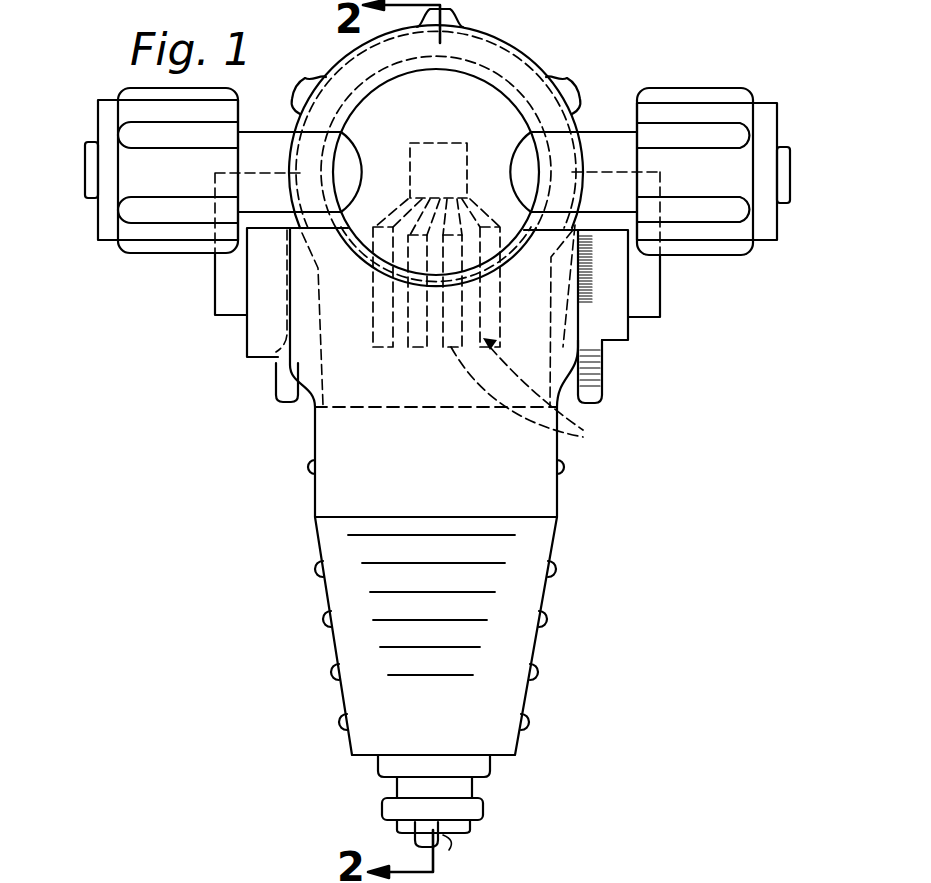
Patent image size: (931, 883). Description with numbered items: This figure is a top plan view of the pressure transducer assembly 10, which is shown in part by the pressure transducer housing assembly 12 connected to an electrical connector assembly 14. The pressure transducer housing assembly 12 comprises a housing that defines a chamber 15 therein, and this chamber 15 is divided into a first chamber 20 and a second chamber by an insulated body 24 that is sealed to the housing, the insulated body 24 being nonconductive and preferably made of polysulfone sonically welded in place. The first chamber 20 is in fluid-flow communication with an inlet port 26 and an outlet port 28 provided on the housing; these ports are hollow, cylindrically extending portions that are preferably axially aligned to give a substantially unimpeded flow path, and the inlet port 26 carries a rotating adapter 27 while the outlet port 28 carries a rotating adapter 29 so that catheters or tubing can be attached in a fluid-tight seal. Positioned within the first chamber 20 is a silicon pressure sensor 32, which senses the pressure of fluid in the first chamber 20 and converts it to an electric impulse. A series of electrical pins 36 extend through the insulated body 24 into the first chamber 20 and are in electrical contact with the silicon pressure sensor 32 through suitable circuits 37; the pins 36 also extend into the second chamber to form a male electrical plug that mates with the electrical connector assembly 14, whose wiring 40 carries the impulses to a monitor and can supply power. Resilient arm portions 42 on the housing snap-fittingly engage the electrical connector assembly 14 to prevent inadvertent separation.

The pressure transducer assembly 10 is at (229, 344).
The pressure transducer housing assembly 12 is at (521, 40).
The electrical connector assembly 14 is at (562, 493).
The chamber 15 is at (470, 117).
The first chamber 20 is at (437, 172).
The insulated body 24 is at (590, 88).
The inlet port 26 is at (781, 203).
The rotating adapter 27 is at (718, 217).
The outlet port 28 is at (92, 200).
The rotating adapter 29 is at (137, 213).
The silicon pressure sensor 32 is at (438, 170).
The electrical pins 36 is at (534, 398).
The circuits 37 is at (461, 207).
The wiring 40 is at (457, 845).
The resilient arm portions 42 is at (282, 386).